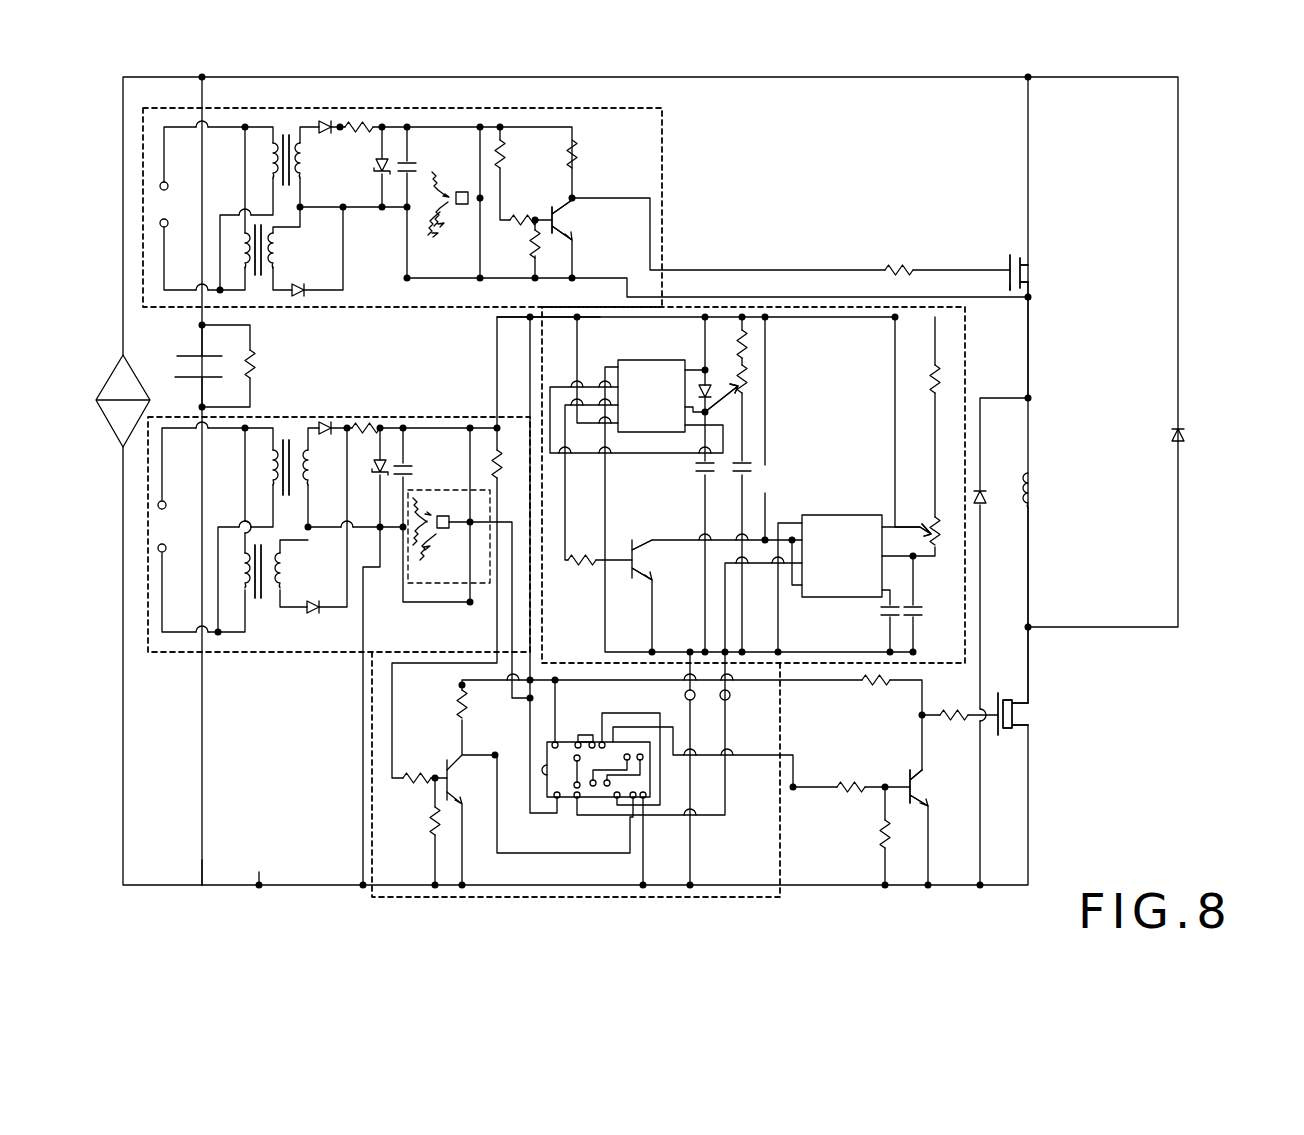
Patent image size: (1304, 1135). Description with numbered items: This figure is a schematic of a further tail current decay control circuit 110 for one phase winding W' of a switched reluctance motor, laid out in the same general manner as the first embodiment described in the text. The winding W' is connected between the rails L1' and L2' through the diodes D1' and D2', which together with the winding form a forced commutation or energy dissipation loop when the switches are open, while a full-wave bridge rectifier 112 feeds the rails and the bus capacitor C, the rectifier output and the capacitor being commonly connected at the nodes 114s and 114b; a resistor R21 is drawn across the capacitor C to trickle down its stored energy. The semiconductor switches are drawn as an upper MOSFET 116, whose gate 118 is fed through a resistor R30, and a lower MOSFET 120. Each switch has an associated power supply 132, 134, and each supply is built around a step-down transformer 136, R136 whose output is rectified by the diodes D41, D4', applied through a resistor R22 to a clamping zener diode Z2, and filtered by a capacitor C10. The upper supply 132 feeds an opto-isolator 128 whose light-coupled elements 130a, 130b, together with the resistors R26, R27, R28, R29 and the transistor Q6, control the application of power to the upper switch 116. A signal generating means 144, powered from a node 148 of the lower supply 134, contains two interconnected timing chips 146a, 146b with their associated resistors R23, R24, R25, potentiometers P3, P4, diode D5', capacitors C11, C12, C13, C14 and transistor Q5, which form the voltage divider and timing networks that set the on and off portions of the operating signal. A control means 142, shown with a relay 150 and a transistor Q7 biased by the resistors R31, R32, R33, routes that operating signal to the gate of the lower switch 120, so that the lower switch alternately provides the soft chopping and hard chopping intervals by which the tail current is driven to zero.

The motor control circuit 110 is at (1186, 502).
The DC power source 112 is at (108, 420).
The positive supply rail 114s is at (206, 82).
The negative supply rail 114b is at (203, 882).
The upper switching transistor 116 is at (992, 255).
The gate of upper switching transistor 118 is at (1010, 292).
The lower switching transistor 120 is at (1012, 727).
The optical coupler 128 is at (458, 228).
The phototransistor 130a is at (444, 190).
The phototransistor 130b is at (431, 548).
The upper gate drive power supply 132 is at (522, 110).
The lower gate drive power supply 134 is at (343, 670).
The transformer 136 is at (276, 230).
The transformer R136 is at (280, 570).
The relay control circuit 142 is at (784, 705).
The current control circuit 144 is at (768, 302).
The comparator 146a is at (628, 360).
The comparator 146b is at (815, 515).
The supply node 148 is at (528, 320).
The relay 150 is at (575, 740).
The bus capacitor C is at (182, 354).
The capacitor C10 is at (412, 163).
The capacitor C11 is at (698, 478).
The capacitor C12 is at (754, 466).
The capacitor C13 is at (882, 620).
The capacitor C14 is at (913, 618).
The diode D41 is at (327, 118).
The diode D4' is at (317, 452).
The diode D5' is at (715, 371).
The freewheeling diode D1' is at (962, 482).
The freewheeling diode D2' is at (1147, 444).
The upper gate drive power supply block L1' is at (581, 92).
The lower control block L2' is at (825, 873).
The potentiometer P3 is at (760, 380).
The potentiometer P4 is at (930, 530).
The transistor Q5 is at (638, 540).
The transistor Q6 is at (564, 230).
The transistor Q7 is at (917, 792).
The resistor R21 is at (262, 360).
The resistor R22 is at (362, 122).
The resistor R23 is at (752, 346).
The resistor R24 is at (580, 553).
The resistor R25 is at (940, 380).
The resistor R26 is at (503, 150).
The resistor R27 is at (517, 217).
The resistor R28 is at (530, 244).
The resistor R29 is at (576, 153).
The gate resistor R30 is at (895, 265).
The resistor R31 is at (862, 764).
The resistor R32 is at (882, 828).
The resistor R33 is at (878, 686).
The motor phase winding W' is at (1047, 493).
The zener diode Z2 is at (385, 170).